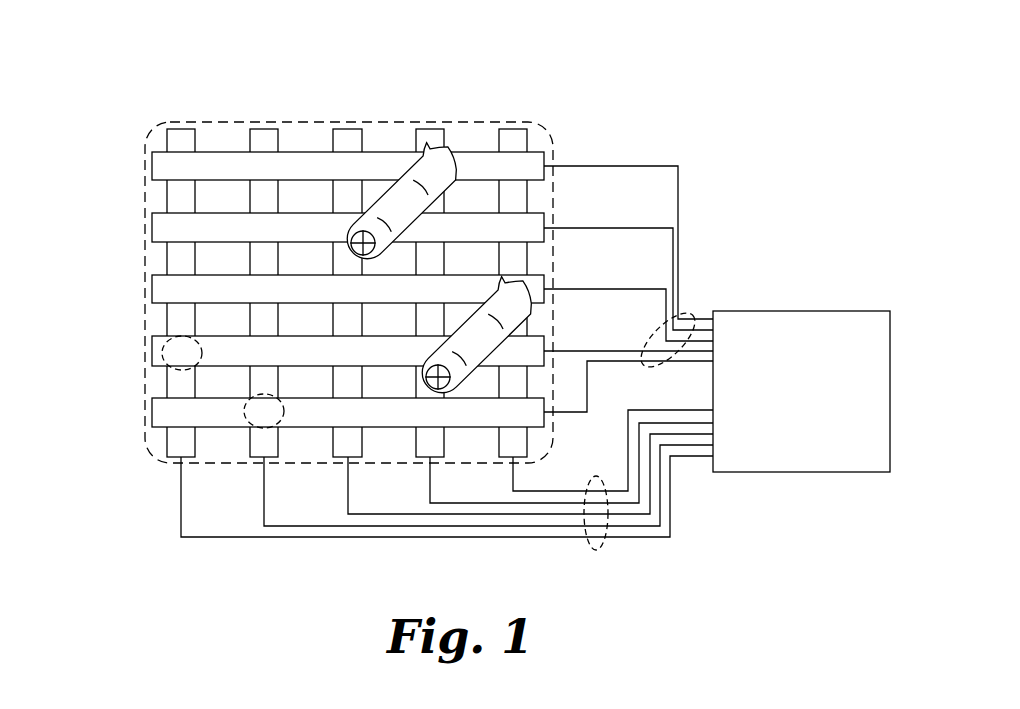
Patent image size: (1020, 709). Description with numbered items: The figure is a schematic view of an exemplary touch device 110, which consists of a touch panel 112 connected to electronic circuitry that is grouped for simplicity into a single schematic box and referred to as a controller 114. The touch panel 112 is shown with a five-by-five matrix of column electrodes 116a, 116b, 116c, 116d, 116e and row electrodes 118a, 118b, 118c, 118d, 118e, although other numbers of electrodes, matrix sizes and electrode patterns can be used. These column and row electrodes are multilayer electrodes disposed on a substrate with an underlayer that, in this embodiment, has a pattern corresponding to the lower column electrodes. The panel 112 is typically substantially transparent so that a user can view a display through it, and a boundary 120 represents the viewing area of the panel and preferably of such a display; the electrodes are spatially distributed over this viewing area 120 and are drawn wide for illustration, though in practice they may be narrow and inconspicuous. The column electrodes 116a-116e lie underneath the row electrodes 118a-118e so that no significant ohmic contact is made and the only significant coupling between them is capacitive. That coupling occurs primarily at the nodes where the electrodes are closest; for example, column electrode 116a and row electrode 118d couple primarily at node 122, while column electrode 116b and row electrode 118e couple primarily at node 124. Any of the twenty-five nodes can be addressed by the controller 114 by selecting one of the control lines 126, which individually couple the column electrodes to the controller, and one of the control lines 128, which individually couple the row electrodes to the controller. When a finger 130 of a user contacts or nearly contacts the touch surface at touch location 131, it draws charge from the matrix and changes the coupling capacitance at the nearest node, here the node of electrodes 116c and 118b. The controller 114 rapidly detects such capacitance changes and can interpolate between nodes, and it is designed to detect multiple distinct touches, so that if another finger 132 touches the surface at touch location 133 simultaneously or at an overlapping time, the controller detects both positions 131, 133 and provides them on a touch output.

The touch device 110 is at (713, 67).
The touch panel 112 is at (145, 117).
The controller 114 is at (801, 391).
The column multilayer electrode 116a is at (180, 137).
The column multilayer electrode 116b is at (264, 137).
The column multilayer electrode 116c is at (347, 137).
The column multilayer electrode 116d is at (430, 137).
The column multilayer electrode 116e is at (513, 137).
The row multilayer electrode 118a is at (160, 167).
The row multilayer electrode 118b is at (160, 228).
The row multilayer electrode 118c is at (160, 291).
The row multilayer electrode 118d is at (160, 353).
The row multilayer electrode 118e is at (160, 413).
The boundary 120 is at (547, 135).
The node 122 is at (182, 331).
The node 124 is at (263, 431).
The control lines 126 is at (594, 550).
The control lines 128 is at (684, 311).
The finger 130 is at (422, 167).
The touch location 131 is at (362, 240).
The finger 132 is at (520, 297).
The touch location 133 is at (430, 383).